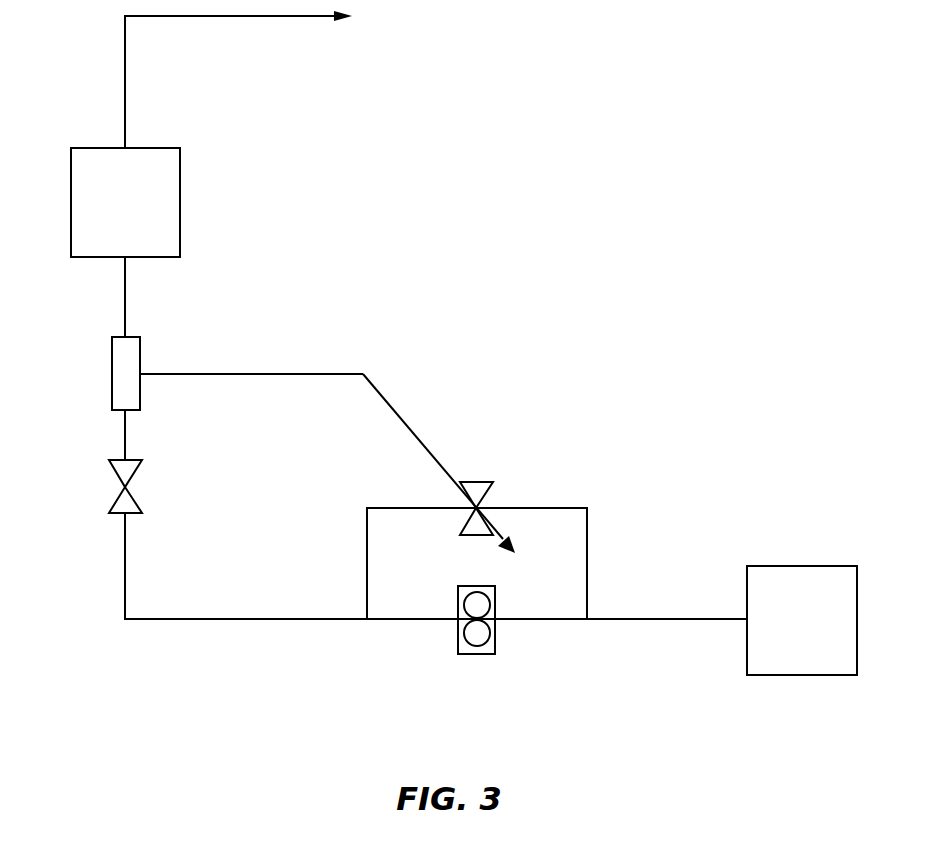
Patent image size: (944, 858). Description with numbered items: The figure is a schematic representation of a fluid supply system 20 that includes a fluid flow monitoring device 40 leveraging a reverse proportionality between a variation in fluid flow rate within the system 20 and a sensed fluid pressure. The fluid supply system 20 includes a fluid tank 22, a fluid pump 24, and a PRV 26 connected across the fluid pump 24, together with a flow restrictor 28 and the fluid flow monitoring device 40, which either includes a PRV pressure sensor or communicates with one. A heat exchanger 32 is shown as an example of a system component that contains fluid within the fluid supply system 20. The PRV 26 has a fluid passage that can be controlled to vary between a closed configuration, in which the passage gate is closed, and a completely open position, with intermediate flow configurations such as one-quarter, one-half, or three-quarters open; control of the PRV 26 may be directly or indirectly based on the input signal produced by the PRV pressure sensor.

The fluid supply system 20 is at (656, 188).
The fluid tank 22 is at (788, 636).
The fluid pump 24 is at (475, 654).
The PRV 26 is at (476, 482).
The flow restrictor 28 is at (118, 487).
The heat exchanger 32 is at (111, 218).
The fluid flow monitoring device 40 is at (112, 373).